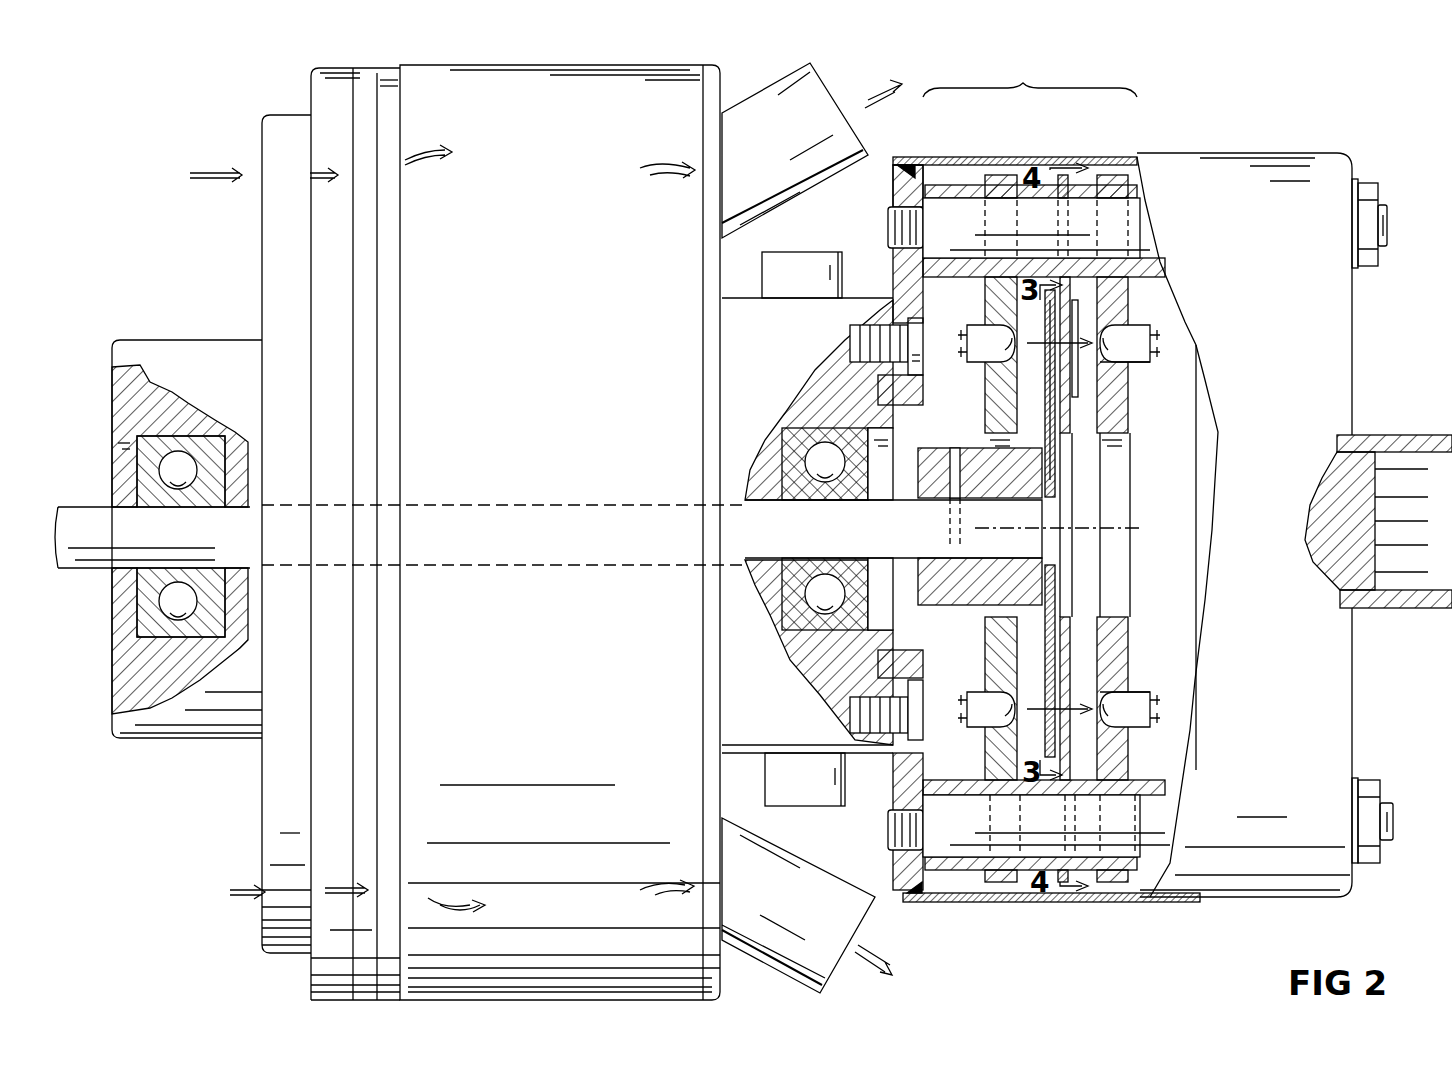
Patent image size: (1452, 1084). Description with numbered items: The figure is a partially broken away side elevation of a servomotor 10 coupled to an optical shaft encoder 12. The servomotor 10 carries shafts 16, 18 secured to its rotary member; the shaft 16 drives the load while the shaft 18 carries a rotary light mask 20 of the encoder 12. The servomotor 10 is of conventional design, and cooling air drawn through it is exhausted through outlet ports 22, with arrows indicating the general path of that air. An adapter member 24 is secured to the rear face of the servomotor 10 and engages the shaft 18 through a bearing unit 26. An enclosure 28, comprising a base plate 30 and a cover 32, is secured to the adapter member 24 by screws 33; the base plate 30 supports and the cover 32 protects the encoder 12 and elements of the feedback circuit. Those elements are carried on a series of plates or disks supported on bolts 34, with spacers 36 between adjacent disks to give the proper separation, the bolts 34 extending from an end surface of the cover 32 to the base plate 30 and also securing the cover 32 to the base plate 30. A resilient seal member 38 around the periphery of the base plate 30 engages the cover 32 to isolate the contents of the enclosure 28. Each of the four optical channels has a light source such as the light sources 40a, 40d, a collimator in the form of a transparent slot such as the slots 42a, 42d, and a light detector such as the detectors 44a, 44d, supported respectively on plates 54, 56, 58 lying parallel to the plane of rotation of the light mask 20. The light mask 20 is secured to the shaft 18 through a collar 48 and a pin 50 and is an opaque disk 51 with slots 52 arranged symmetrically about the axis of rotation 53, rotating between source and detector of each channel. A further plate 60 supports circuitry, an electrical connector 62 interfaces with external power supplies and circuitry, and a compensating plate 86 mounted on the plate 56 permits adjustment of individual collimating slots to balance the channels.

The servomotor 10 is at (550, 374).
The optical shaft encoder 12 is at (1030, 77).
The shaft 16 is at (95, 522).
The shaft 18 is at (1050, 513).
The rotary light mask 20 is at (1034, 433).
The outlet ports 22 is at (830, 103).
The adapter member 24 is at (760, 368).
The bearing unit 26 is at (806, 624).
The enclosure 28 is at (1228, 140).
The base plate 30 is at (882, 198).
The cover 32 is at (1287, 172).
The screws 33 is at (870, 340).
The bolts 34 is at (893, 222).
The spacers 36 is at (945, 185).
The resilient seal member 38 is at (905, 160).
The light source 40a is at (975, 360).
The light source 40d is at (975, 692).
The collimator slot 42a is at (1110, 325).
The collimator slot 42d is at (1112, 727).
The light detector 44a is at (1138, 362).
The light detector 44d is at (1140, 692).
The collar 48 is at (1010, 483).
The pin 50 is at (955, 448).
The opaque disk 51 is at (1046, 383).
The slots 52 is at (1040, 322).
The axis of rotation 53 is at (1062, 532).
The plate 54 is at (1000, 185).
The plate 56 is at (1063, 185).
The plate 58 is at (1112, 185).
The plate 60 is at (1205, 425).
The electrical connector 62 is at (1383, 435).
The compensating plate 86 is at (1078, 393).